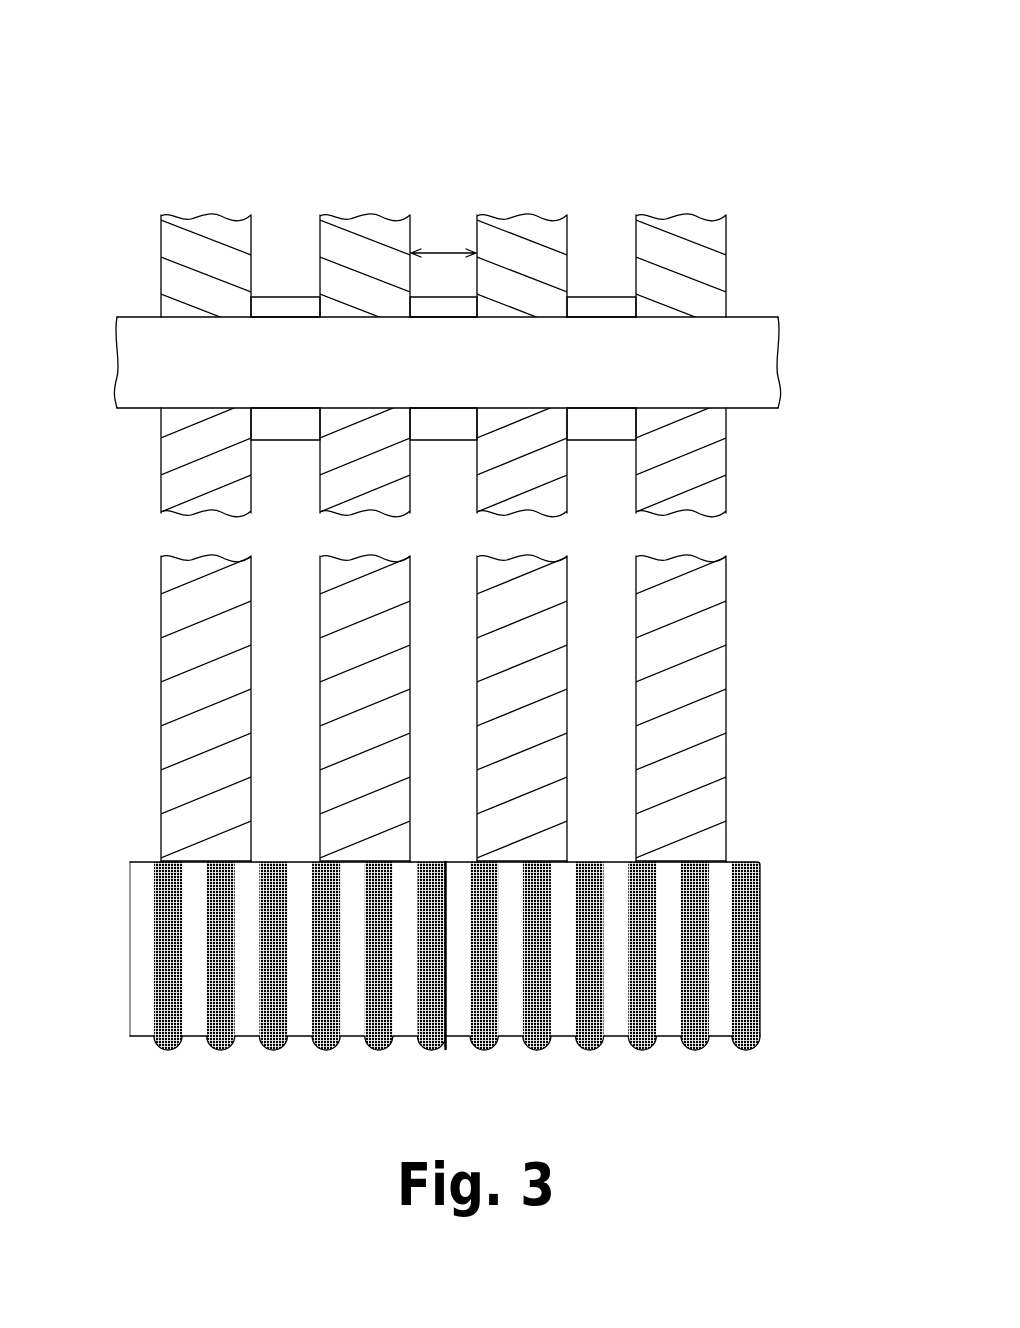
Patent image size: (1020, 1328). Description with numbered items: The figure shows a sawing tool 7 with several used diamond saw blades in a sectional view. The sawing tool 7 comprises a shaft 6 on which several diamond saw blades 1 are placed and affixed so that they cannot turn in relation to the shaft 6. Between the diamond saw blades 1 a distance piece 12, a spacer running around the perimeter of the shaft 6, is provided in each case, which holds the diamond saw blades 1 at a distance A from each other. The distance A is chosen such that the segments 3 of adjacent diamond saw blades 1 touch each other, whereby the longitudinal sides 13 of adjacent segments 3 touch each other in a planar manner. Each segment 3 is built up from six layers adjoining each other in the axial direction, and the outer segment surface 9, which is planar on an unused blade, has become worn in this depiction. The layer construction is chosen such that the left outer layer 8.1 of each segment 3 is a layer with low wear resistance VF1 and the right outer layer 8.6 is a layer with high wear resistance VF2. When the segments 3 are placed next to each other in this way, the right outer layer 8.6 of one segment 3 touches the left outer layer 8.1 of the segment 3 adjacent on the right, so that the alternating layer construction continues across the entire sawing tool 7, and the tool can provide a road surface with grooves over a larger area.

The diamond saw blade 1 is at (177, 637).
The segment 3 is at (129, 860).
The shaft 6 is at (280, 343).
The sawing tool 7 is at (567, 142).
The left outer layer 8.1 is at (142, 1015).
The right outer layer 8.6 is at (425, 973).
The outer segment surface 9 is at (752, 1058).
The distance piece 12 is at (270, 434).
The longitudinal sides 13 is at (448, 1005).
The distance A is at (446, 250).
The low wear resistance VF1 is at (130, 912).
The high wear resistance VF2 is at (750, 902).